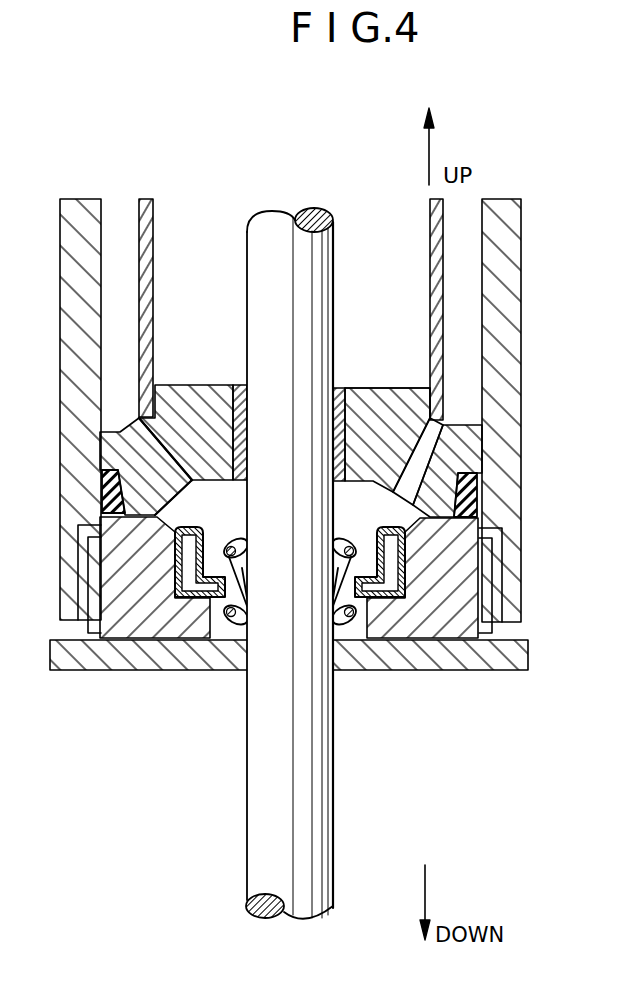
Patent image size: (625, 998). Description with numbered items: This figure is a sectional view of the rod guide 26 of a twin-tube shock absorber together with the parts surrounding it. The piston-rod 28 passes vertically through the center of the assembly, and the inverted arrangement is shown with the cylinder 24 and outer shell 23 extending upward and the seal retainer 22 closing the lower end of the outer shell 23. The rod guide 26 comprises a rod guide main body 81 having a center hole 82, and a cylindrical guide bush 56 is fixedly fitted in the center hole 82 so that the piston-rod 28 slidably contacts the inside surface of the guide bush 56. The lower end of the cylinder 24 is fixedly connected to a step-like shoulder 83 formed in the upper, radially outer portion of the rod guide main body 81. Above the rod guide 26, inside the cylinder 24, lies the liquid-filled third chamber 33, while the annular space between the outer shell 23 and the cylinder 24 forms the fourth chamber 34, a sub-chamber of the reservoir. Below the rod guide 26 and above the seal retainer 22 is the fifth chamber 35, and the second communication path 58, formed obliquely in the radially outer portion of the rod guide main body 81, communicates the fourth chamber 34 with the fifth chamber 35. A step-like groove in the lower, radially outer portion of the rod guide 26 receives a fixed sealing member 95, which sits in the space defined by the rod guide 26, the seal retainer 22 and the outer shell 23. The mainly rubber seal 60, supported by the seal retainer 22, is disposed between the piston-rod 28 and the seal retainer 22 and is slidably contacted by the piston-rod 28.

The seal retainer 22 is at (425, 615).
The outer shell 23 is at (508, 298).
The cylinder 24 is at (440, 252).
The rod guide 26 is at (485, 414).
The piston-rod 28 is at (320, 252).
The third chamber 33 is at (177, 288).
The fourth chamber 34 is at (467, 333).
The fifth chamber 35 is at (410, 525).
The guide bush 56 is at (343, 392).
The second communication path 58 is at (143, 447).
The seal 60 is at (365, 598).
The rod guide main body 81 is at (402, 393).
The center hole 82 is at (345, 457).
The step-like shoulder 83 is at (443, 386).
The fixed sealing member 95 is at (473, 497).